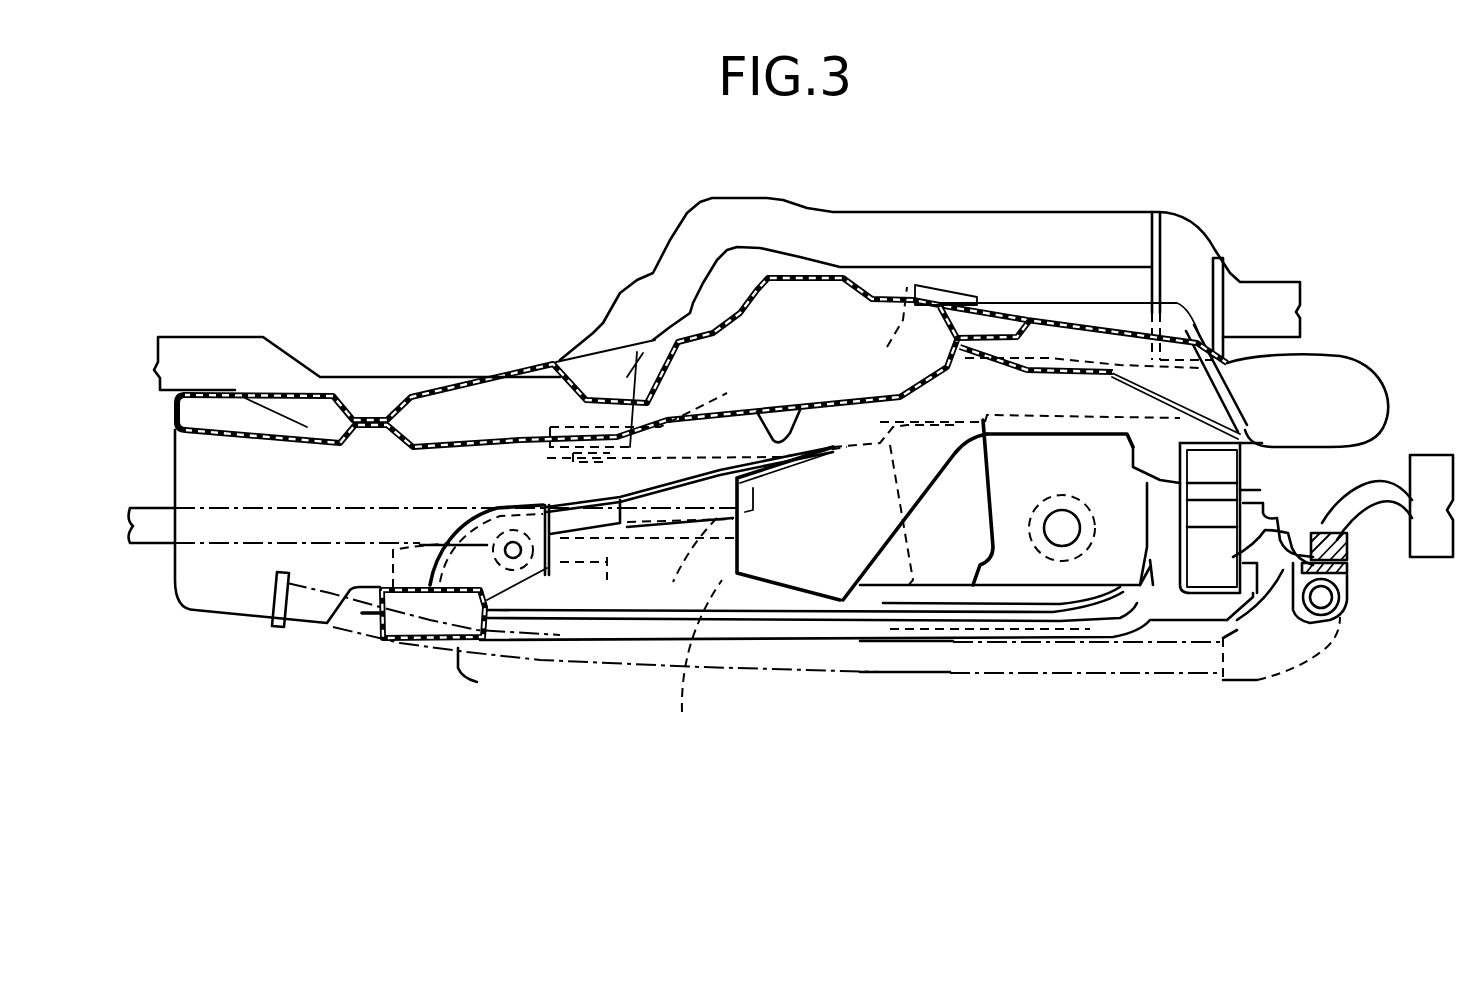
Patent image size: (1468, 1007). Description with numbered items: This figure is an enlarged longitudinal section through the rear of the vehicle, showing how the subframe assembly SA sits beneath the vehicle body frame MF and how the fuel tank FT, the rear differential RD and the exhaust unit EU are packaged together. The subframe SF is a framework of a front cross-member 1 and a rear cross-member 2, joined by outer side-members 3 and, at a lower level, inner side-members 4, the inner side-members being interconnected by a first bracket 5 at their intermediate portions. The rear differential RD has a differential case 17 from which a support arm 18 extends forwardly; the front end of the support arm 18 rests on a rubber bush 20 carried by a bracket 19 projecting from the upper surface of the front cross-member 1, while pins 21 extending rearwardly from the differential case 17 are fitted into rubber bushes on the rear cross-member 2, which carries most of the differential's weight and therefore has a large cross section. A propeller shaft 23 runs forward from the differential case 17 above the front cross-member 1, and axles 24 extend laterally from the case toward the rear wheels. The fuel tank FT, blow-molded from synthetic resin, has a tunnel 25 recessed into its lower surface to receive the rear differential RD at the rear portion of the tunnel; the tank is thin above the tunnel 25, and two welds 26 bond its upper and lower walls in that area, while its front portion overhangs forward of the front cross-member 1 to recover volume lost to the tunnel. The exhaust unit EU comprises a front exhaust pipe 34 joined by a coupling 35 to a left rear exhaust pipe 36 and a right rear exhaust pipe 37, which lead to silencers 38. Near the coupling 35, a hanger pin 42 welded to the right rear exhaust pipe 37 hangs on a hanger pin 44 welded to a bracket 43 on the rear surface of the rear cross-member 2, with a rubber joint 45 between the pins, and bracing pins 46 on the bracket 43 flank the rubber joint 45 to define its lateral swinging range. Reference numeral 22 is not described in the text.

The front cross-member 1 is at (492, 550).
The rear cross-member 2 is at (1250, 437).
The outer side-member 3 is at (747, 413).
The inner side-member 4 is at (930, 593).
The first bracket 5 is at (983, 497).
The differential case 17 is at (765, 590).
The support arm 18 is at (597, 503).
The bracket 19 is at (480, 533).
The rubber bush 20 is at (600, 540).
The pin 21 is at (1200, 433).
The stopper 22 is at (1200, 497).
The propeller shaft 23 is at (237, 513).
The axle 24 is at (1080, 520).
The tunnel 25 is at (783, 412).
The weld 26 is at (381, 413).
The front exhaust pipe 34 is at (877, 680).
The coupling 35 is at (1290, 667).
The left rear exhaust pipe 36 is at (1333, 620).
The right rear exhaust pipe 37 is at (1307, 400).
The silencer 38 is at (1420, 463).
The hanger pin 42 is at (1285, 622).
The bracket 43 is at (1247, 510).
The hanger pin 44 is at (1310, 530).
The rubber joint 45 is at (1350, 570).
The bracing pin 46 is at (1345, 607).
The vehicle body frame MF is at (780, 207).
The subframe assembly SA is at (523, 298).
The fuel tank FT is at (223, 617).
The subframe SF is at (458, 645).
The rear differential RD is at (727, 570).
The exhaust unit EU is at (1075, 675).